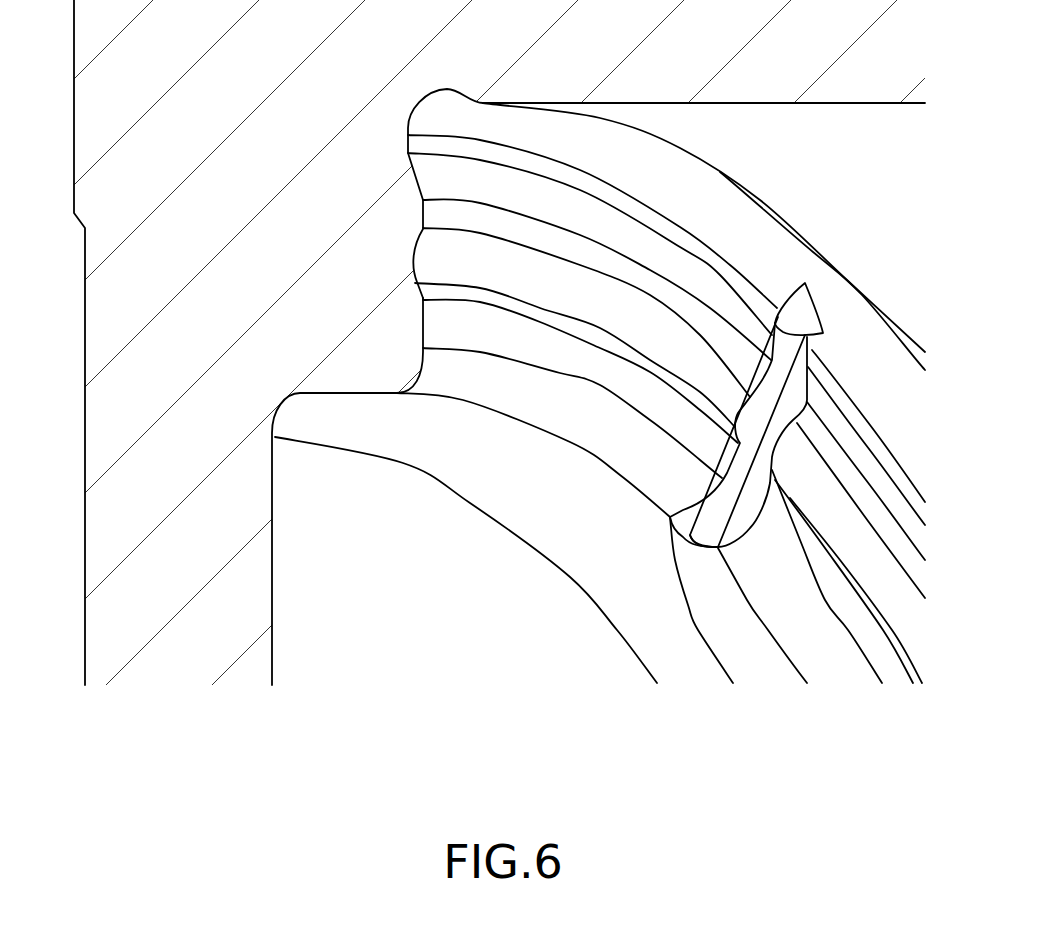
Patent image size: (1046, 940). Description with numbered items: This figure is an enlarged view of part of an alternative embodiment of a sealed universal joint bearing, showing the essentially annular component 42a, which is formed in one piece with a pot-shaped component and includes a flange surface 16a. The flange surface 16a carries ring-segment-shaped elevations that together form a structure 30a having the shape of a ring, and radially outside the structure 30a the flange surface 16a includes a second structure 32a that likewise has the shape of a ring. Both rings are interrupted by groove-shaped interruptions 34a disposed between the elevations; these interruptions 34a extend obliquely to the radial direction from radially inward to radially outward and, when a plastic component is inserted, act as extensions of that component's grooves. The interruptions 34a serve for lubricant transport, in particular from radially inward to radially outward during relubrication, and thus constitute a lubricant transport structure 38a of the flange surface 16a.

The flange surface 16a is at (690, 273).
The structure 30a is at (520, 365).
The second structure 32a is at (575, 232).
The interruptions 34a is at (756, 415).
The lubricant transport structure 38a is at (743, 512).
The annular component 42a is at (322, 338).